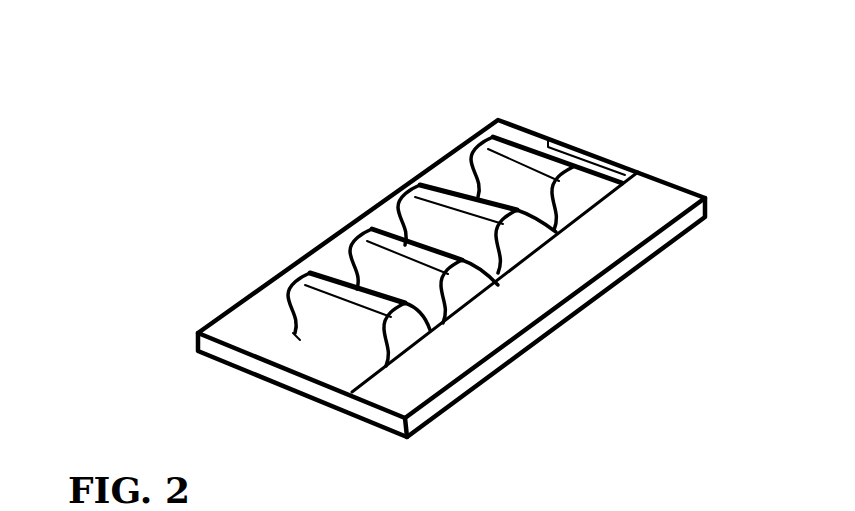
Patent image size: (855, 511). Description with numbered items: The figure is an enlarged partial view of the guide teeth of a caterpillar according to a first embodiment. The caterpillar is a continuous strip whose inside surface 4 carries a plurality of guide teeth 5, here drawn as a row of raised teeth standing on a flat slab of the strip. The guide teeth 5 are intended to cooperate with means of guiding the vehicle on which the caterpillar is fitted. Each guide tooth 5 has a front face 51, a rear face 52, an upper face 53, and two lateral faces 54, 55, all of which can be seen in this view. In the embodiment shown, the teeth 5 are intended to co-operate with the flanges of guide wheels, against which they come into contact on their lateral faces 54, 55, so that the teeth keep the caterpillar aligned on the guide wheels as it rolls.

The inside surface 4 is at (627, 227).
The guide tooth 5 is at (361, 282).
The front face 51 is at (300, 323).
The rear face 52 is at (338, 276).
The upper face 53 is at (365, 303).
The lateral face 54 is at (397, 328).
The lateral face 55 is at (288, 292).